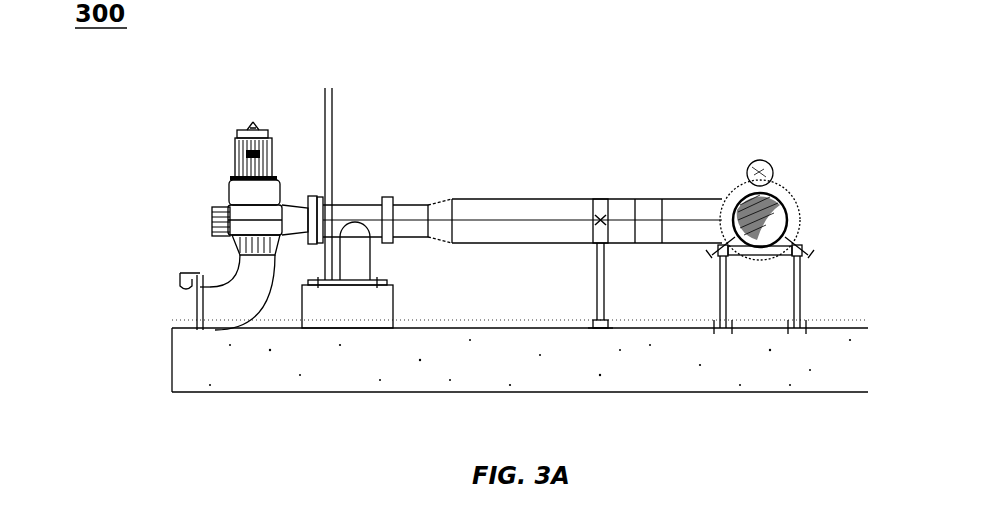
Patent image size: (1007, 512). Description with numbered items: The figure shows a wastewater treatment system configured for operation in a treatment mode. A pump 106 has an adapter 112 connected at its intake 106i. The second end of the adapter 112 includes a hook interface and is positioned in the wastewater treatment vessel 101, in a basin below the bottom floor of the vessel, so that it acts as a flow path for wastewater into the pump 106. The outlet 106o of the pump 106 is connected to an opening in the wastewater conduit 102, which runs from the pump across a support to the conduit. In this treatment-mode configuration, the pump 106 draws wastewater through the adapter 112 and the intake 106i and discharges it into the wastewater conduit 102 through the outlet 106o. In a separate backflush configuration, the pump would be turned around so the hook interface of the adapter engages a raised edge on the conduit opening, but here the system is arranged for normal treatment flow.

The wastewater treatment vessel 101 is at (846, 340).
The wastewater conduit 102 is at (784, 200).
The pump 106 is at (222, 181).
The intake 106i is at (237, 232).
The outlet 106o is at (320, 193).
The adapter 112 is at (212, 313).